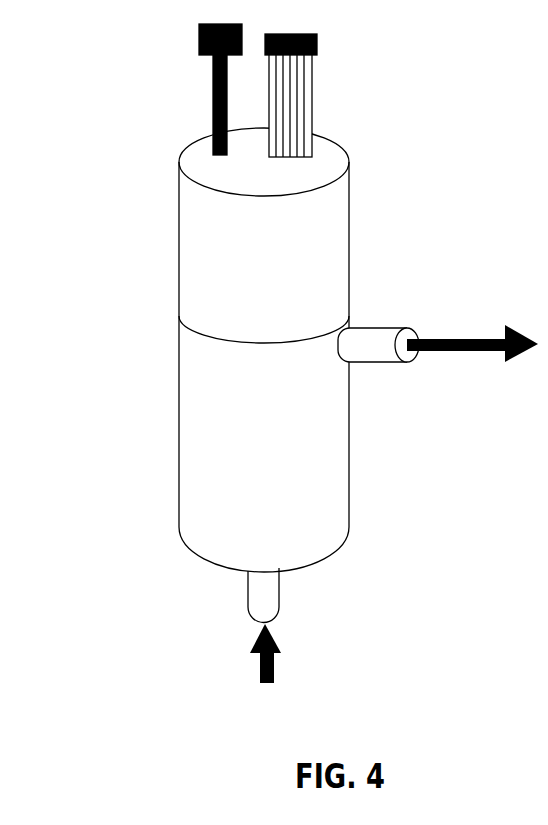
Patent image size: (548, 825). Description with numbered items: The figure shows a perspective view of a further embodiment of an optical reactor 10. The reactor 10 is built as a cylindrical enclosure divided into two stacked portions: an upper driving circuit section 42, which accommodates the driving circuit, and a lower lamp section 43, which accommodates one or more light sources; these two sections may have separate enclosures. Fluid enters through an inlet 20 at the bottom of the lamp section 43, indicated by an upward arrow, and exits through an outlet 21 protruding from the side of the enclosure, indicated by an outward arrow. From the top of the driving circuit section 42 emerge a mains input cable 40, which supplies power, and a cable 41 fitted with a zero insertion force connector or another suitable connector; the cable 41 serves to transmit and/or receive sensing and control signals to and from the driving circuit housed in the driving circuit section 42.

The reactor 10 is at (285, 353).
The inlet 20 is at (260, 589).
The outlet 21 is at (370, 343).
The mains input cable 40 is at (213, 102).
The cable 41 is at (311, 117).
The driving circuit section 42 is at (328, 268).
The lamp section 43 is at (313, 475).